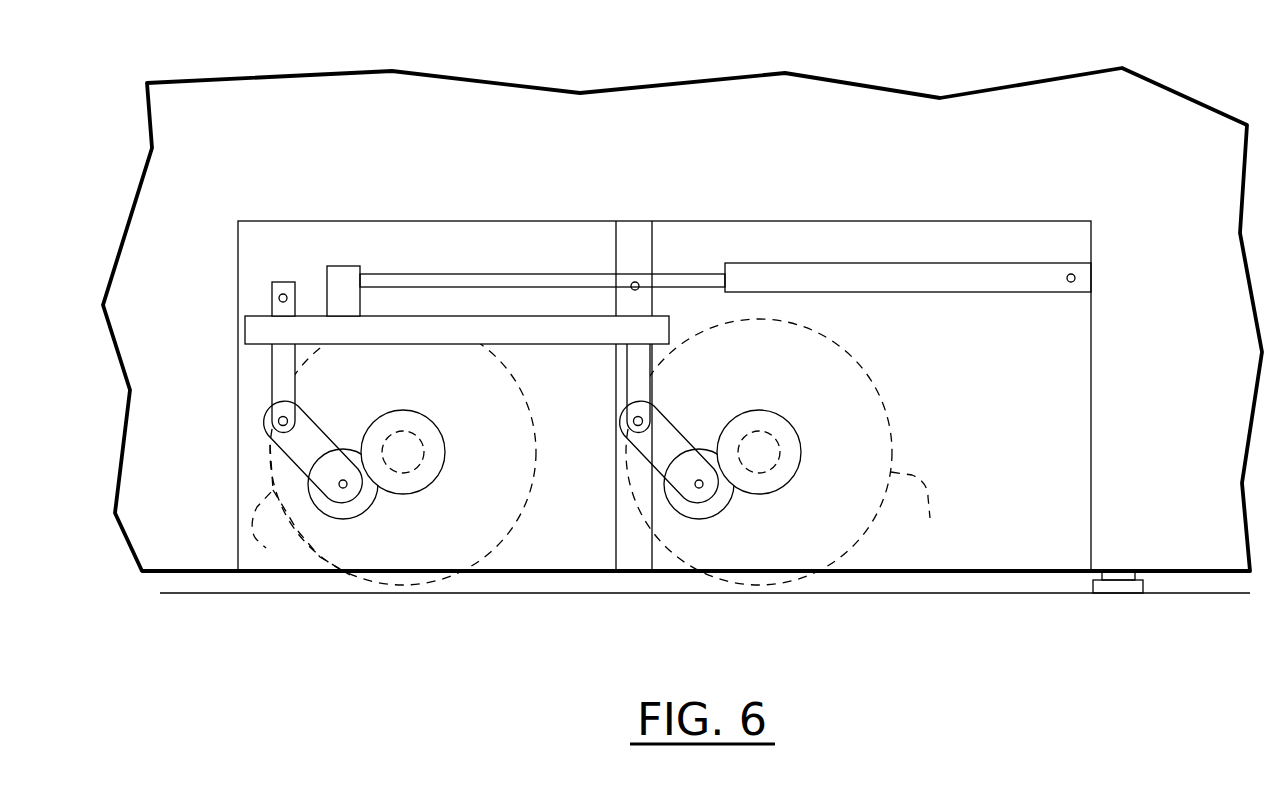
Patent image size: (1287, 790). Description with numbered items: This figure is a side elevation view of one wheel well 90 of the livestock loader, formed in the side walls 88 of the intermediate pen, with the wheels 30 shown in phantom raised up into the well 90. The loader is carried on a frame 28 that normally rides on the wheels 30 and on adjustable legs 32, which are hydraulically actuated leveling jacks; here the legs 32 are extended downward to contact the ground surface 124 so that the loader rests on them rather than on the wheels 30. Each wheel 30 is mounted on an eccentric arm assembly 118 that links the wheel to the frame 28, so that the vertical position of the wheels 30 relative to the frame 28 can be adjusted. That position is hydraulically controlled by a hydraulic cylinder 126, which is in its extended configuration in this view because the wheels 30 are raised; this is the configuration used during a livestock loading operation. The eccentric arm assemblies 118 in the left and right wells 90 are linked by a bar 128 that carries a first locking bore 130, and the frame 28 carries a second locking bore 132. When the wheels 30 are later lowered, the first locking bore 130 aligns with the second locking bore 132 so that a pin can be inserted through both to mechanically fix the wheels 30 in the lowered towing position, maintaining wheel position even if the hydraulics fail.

The side walls 88 is at (1094, 142).
The wheel well 90 is at (1065, 393).
The frame 28 is at (628, 240).
The wheels 30 is at (596, 452).
The adjustable legs 32 is at (1112, 571).
The eccentric arm assembly 118 is at (334, 428).
The ground surface 124 is at (1000, 592).
The hydraulic cylinder 126 is at (843, 273).
The bar 128 is at (582, 345).
The first locking bore 130 is at (287, 297).
The second locking bore 132 is at (631, 287).